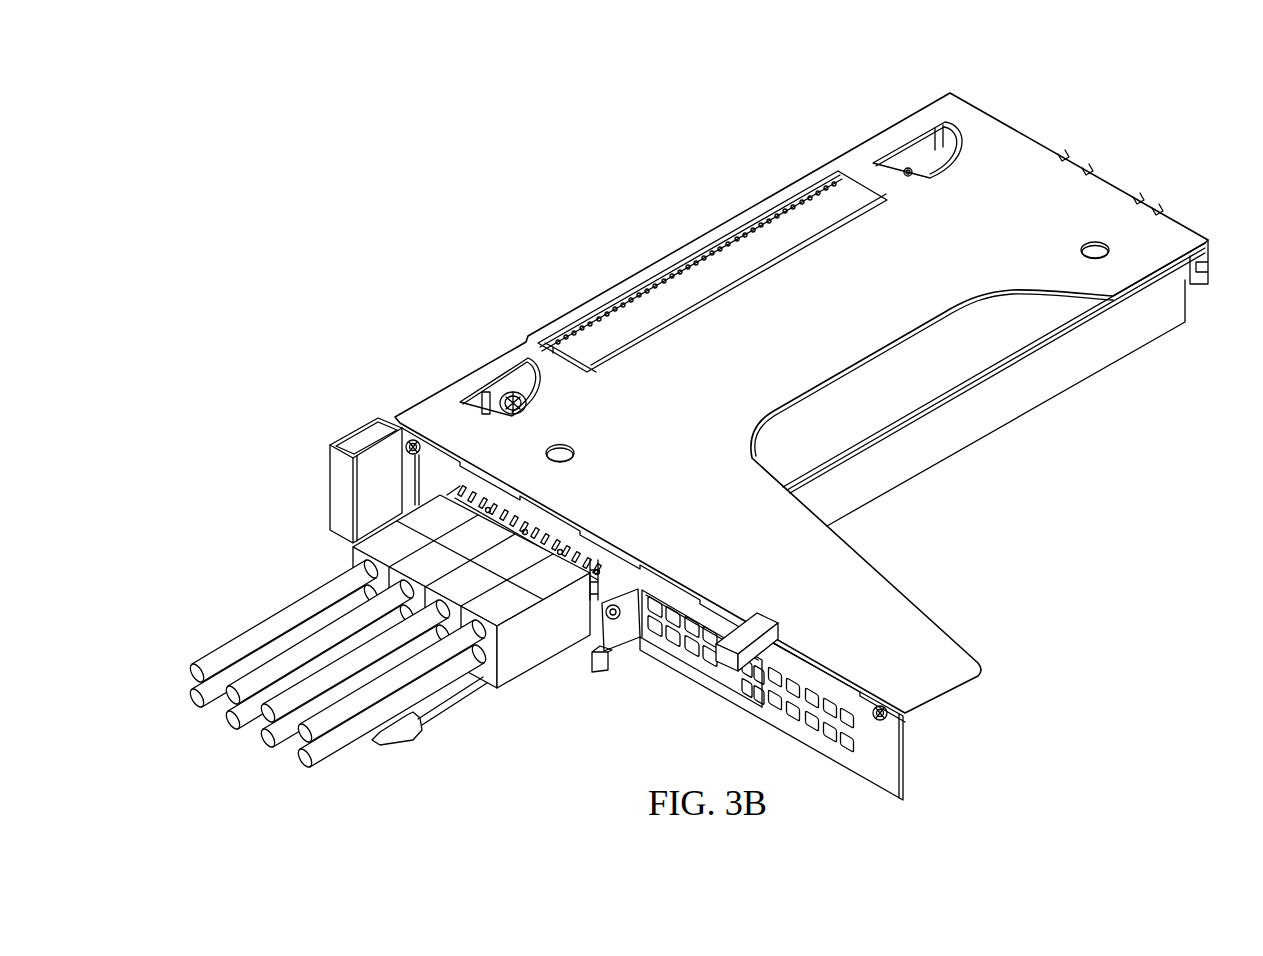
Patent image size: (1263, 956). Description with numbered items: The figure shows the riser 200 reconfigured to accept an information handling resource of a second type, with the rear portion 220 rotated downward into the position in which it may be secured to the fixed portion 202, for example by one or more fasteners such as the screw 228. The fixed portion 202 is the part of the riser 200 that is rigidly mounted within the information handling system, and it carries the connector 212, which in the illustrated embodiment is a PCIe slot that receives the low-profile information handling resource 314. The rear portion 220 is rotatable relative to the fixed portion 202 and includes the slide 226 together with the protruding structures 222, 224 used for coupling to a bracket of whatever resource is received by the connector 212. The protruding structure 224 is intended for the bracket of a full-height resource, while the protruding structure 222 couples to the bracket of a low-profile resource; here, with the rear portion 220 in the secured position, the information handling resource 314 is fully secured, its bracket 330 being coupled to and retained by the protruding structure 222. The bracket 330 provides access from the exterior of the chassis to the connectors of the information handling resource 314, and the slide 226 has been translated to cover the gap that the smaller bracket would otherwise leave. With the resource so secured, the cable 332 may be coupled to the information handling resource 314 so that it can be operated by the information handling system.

The riser 200 is at (1200, 110).
The fixed portion 202 is at (1012, 155).
The connector 212 is at (690, 260).
The screw 228 is at (428, 437).
The low-profile information handling resource 314 is at (1012, 410).
The cable 332 is at (285, 616).
The slide 226 is at (702, 623).
The protruding structure 224 is at (735, 630).
The protruding structure 222 is at (593, 665).
The bracket 330 is at (613, 637).
The rear portion 220 is at (793, 728).